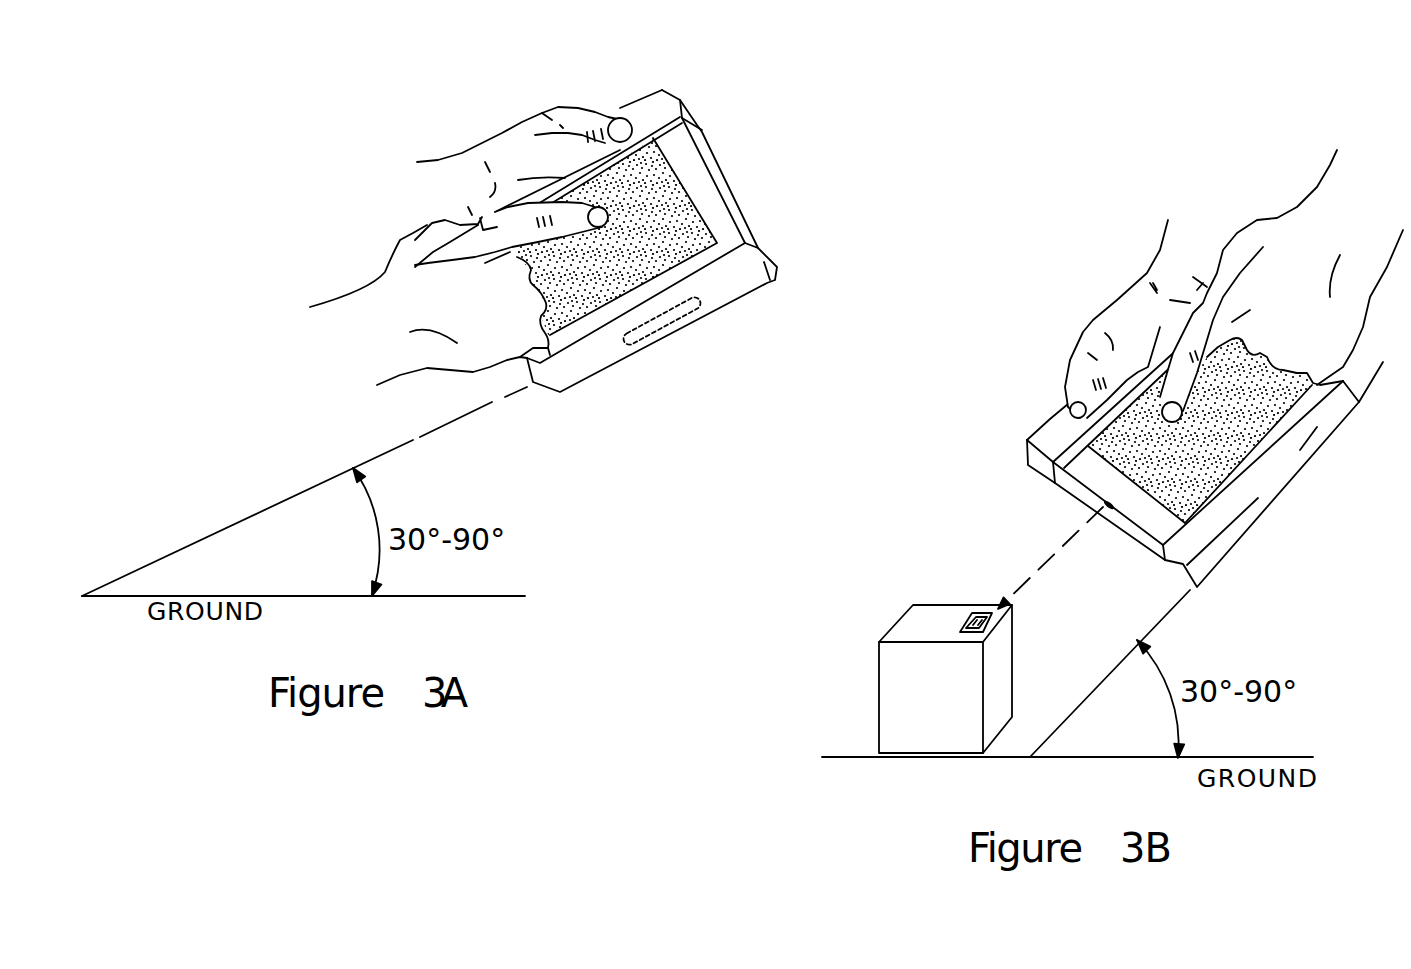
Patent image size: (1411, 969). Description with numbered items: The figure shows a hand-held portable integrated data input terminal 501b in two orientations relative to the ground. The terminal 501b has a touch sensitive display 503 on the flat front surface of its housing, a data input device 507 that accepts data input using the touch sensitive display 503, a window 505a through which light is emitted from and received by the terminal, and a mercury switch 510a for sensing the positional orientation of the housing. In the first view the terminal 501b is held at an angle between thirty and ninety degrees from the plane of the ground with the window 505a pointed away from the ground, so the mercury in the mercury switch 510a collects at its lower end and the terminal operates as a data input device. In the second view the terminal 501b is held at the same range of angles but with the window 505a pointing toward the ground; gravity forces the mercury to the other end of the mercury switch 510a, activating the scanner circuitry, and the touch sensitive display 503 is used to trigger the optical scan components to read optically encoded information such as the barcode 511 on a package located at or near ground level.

In FIG. 3A, the terminal 501b is at (782, 272).
In FIG. 3B, the terminal 501b is at (1030, 438).
In FIG. 3A, the touch sensitive display 503 is at (663, 280).
In FIG. 3B, the touch sensitive display 503 is at (1135, 498).
In FIG. 3A, the window 505a is at (733, 204).
In FIG. 3B, the window 505a is at (1072, 485).
In FIG. 3A, the data input device 507 is at (600, 292).
In FIG. 3B, the data input device 507 is at (1238, 438).
In FIG. 3A, the mercury switch 510a is at (707, 317).
In FIG. 3B, the barcode 511 is at (995, 622).